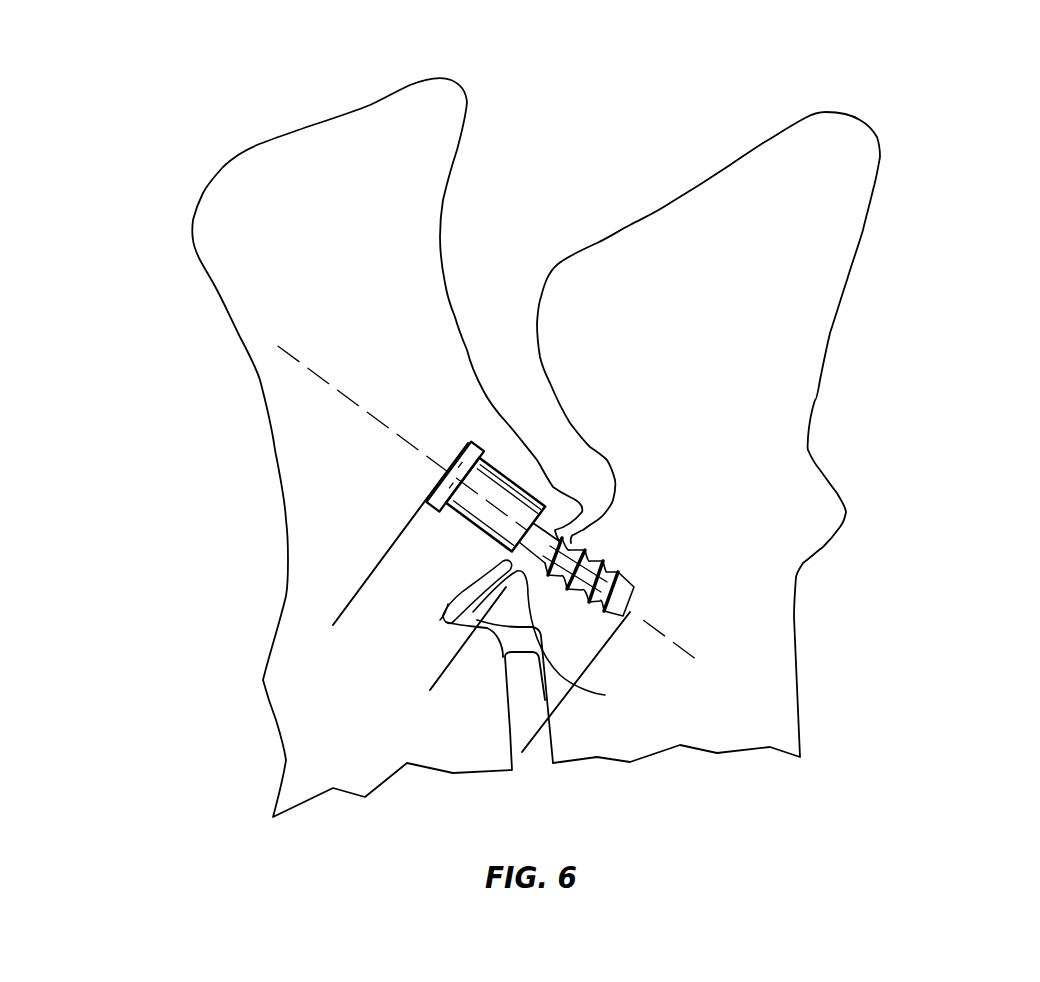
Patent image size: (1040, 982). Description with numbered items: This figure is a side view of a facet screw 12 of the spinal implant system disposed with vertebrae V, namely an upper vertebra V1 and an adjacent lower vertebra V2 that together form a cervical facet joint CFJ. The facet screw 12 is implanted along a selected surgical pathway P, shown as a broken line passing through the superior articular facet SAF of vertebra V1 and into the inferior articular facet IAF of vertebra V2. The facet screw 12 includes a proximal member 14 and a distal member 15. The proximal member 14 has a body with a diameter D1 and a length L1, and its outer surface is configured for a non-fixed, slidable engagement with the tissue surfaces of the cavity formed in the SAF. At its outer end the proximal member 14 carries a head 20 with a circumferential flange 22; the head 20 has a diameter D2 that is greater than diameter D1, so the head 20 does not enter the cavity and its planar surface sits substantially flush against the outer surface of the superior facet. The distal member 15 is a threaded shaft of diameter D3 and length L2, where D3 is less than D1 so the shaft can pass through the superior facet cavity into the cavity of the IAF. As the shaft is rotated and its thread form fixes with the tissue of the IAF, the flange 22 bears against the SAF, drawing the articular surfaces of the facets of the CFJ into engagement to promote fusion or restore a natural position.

The vertebrae V is at (521, 424).
The vertebra V1 is at (237, 249).
The vertebra V2 is at (830, 193).
The facet screw 12 is at (533, 469).
The proximal member 14 is at (533, 497).
The distal member 15 is at (583, 603).
The head 20 is at (468, 447).
The circumferential flange 22 is at (481, 454).
The surgical pathway P is at (314, 373).
The diameter D1 is at (519, 483).
The diameter D2 is at (485, 444).
The diameter D3 is at (606, 545).
The length L1 is at (353, 601).
The length L2 is at (448, 668).
The superior articular facet SAF is at (443, 615).
The inferior articular facet IAF is at (605, 695).
The cervical facet joint CFJ is at (472, 590).